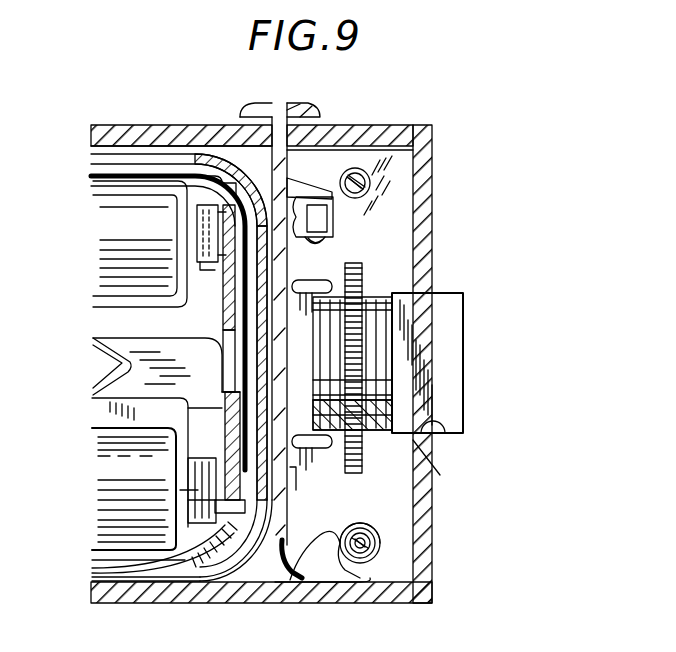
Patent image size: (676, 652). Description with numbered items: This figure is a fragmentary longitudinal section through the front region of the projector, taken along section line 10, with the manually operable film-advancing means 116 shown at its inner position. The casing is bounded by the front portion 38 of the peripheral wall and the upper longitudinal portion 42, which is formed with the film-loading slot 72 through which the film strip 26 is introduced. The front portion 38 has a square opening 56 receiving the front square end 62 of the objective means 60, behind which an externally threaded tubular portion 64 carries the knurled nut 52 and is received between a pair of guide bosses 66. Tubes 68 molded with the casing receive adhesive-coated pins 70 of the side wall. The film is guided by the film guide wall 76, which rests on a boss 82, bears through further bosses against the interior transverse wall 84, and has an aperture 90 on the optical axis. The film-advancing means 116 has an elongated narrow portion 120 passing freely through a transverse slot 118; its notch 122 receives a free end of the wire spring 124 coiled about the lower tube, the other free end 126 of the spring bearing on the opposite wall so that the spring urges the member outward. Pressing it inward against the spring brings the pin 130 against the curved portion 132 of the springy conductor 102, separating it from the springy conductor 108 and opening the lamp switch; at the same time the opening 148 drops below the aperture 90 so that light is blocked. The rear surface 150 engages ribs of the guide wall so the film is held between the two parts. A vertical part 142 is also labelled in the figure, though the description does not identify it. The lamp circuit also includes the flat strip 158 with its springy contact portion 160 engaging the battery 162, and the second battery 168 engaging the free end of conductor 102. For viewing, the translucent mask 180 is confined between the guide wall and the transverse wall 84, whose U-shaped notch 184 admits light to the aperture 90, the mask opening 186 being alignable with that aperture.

The section line 10 is at (218, 362).
The film strip 26 is at (161, 585).
The front portion 38 is at (430, 223).
The longitudinal portion 42 is at (140, 126).
The knurled nut 52 is at (363, 265).
The square opening 56 is at (436, 440).
The objective means 60 is at (463, 404).
The front square end 62 is at (424, 415).
The externally threaded tubular portion 64 is at (370, 445).
The guide bosses 66 is at (325, 280).
The tubes 68 is at (372, 183).
The pins 70 is at (366, 190).
The film-loading slot 72 is at (205, 128).
The film guide wall 76 is at (210, 275).
The boss 82 is at (182, 540).
The interior transverse wall 84 is at (232, 442).
The aperture 90 is at (300, 366).
The conductor 102 is at (295, 186).
The springy conductor 108 is at (98, 163).
The film-advancing means 116 is at (284, 98).
The transverse slot 118 is at (300, 112).
The elongated narrow portion 120 is at (258, 108).
The notch 122 is at (274, 590).
The wire spring 124 is at (328, 528).
The free end 126 is at (318, 590).
The pin 130 is at (333, 218).
The upper edge region 132 is at (318, 243).
The post 142 is at (262, 102).
The opening 148 is at (290, 433).
The rear surface 150 is at (296, 482).
The flat strip 158 is at (140, 348).
The springy contact portion 160 is at (188, 492).
The battery 162 is at (102, 467).
The second battery 168 is at (126, 229).
The translucent mask 180 is at (194, 458).
The U-shaped notch 184 is at (222, 408).
The opening 186 is at (240, 397).